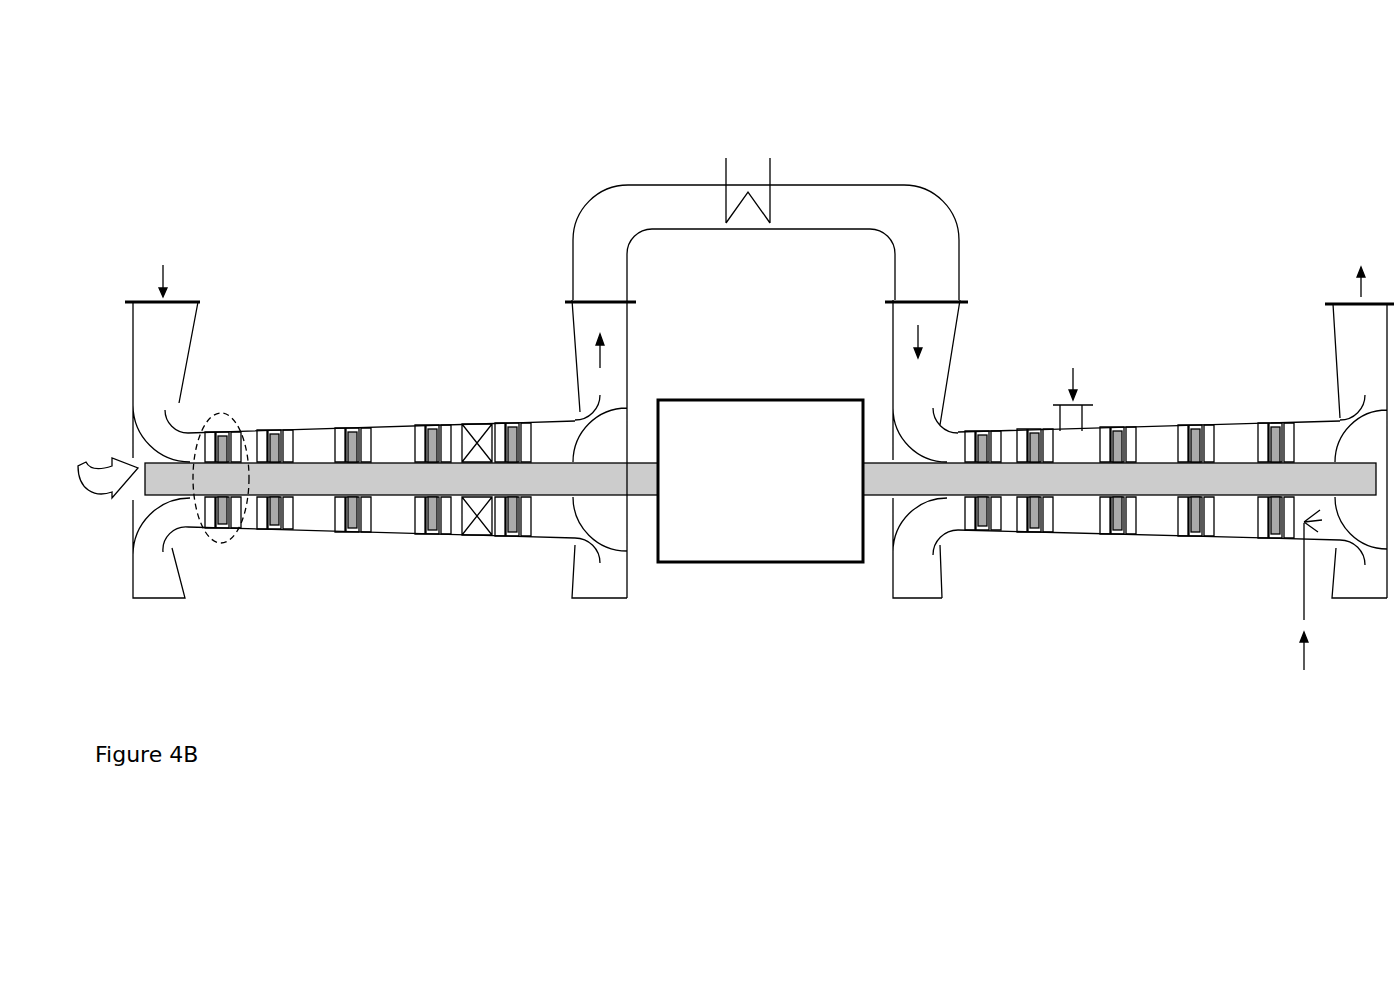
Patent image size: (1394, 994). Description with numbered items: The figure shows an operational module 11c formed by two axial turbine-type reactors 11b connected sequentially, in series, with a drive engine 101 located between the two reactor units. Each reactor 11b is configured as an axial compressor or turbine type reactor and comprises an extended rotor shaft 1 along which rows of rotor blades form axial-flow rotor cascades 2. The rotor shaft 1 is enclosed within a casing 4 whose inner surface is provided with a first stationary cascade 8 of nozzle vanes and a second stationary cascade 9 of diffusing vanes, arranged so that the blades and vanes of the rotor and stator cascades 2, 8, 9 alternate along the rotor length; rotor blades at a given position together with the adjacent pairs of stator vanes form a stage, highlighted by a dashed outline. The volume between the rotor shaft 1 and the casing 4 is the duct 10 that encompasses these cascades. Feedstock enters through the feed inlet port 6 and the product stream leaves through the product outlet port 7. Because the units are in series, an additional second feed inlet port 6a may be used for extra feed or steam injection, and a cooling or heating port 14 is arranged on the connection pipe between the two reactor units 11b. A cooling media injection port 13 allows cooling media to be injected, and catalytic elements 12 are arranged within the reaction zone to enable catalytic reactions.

The rotor shaft 1 is at (405, 482).
The axial-flow cascade with rotor blades 2 is at (268, 508).
The casing 4 is at (567, 417).
The feed inlet port 6 is at (143, 283).
The second feed inlet port or steam injection port 6a is at (1075, 378).
The product outlet port 7 is at (1347, 298).
The first stationary cascade with nozzle vanes 8 is at (418, 438).
The second stationary cascade with diffusing vanes 9 is at (370, 525).
The duct with a vaneless space 10 is at (298, 441).
The rotary machine type reactor according to second embodiment 11b is at (464, 373).
The operational module 11c is at (1293, 138).
The catalytic element 12 is at (472, 532).
The cooling media injection port 13 is at (1295, 663).
The cooling or heating port 14 is at (718, 180).
The drive engine 101 is at (760, 481).